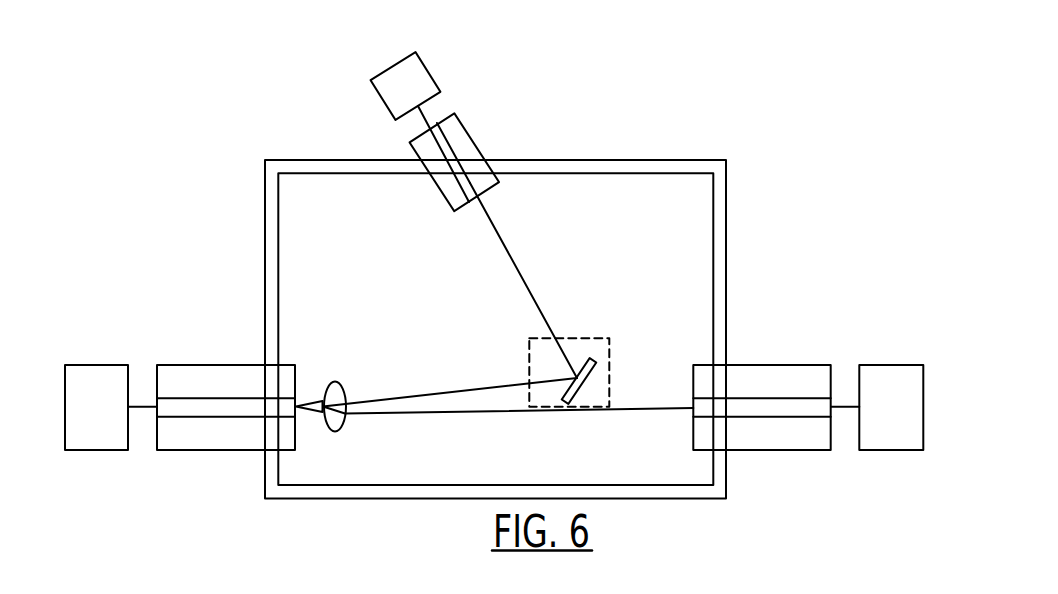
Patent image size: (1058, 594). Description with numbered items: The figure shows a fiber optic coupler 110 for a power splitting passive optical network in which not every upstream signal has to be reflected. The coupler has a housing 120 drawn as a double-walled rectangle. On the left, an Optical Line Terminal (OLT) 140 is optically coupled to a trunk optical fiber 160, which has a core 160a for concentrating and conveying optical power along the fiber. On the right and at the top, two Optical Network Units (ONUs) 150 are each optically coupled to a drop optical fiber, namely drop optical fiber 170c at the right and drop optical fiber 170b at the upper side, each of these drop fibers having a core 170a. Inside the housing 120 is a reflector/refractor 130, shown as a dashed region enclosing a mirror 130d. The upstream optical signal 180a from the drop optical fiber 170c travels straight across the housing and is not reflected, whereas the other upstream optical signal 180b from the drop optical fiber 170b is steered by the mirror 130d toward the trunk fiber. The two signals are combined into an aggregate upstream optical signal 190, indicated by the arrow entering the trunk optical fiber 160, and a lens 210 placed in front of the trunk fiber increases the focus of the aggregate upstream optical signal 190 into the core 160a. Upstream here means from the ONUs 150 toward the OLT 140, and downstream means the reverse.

The fiber optic coupler 110 is at (717, 122).
The housing 120 is at (594, 159).
The reflector and/or refractor 130 is at (529, 355).
The mirror 130d is at (580, 362).
The Optical Line Terminal (OLT) 140 is at (95, 364).
The Optical Network Unit (ONU) 150 is at (427, 65).
The trunk optical fiber 160 is at (217, 364).
The core 160a is at (212, 398).
The core 170a is at (455, 162).
The drop optical fiber 170b is at (409, 152).
The drop optical fiber 170c is at (762, 364).
The upstream optical signal 180a is at (652, 410).
The upstream optical signal 180b is at (506, 251).
The aggregate upstream optical signal 190 is at (312, 402).
The lens 210 is at (345, 385).